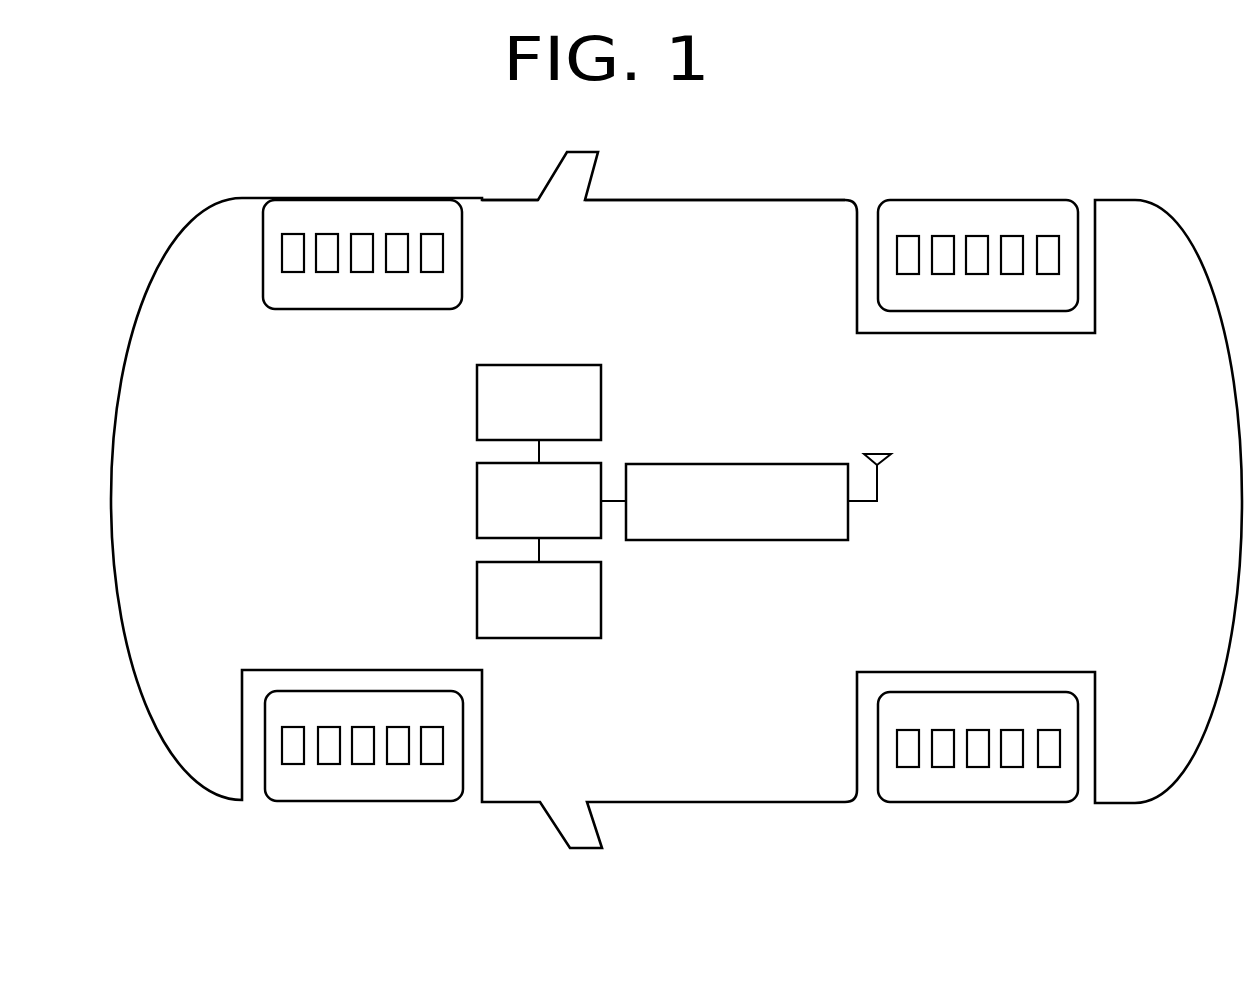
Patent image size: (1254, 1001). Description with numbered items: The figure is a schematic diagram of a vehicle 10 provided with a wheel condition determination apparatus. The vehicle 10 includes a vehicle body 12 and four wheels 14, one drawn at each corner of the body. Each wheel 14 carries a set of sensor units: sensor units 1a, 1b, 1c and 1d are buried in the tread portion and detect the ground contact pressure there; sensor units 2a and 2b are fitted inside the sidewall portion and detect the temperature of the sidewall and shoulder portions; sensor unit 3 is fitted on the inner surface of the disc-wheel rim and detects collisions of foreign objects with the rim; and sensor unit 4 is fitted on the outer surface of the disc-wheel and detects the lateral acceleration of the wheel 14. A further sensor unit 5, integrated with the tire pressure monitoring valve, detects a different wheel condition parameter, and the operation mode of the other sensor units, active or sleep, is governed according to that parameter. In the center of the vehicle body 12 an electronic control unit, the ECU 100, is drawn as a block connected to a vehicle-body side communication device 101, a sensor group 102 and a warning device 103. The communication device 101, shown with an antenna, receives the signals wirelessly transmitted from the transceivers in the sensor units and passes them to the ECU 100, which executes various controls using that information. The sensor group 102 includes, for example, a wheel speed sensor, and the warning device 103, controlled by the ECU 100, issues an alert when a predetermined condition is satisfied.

The sensor unit 1a is at (293, 263).
The sensor unit 1b is at (851, 305).
The sensor unit 1c is at (240, 694).
The sensor unit 1d is at (854, 695).
The sensor unit 2a is at (284, 207).
The sensor unit 2b is at (327, 240).
The sensor unit 3 is at (363, 263).
The sensor unit 4 is at (393, 263).
The sensor unit 5 is at (430, 240).
The vehicle 10 is at (693, 825).
The vehicle body 12 is at (717, 200).
The wheel 14 is at (357, 198).
The electronic control unit 100 is at (477, 498).
The vehicle-body side communication device 101 is at (753, 464).
The sensor group 102 is at (477, 595).
The warning device 103 is at (477, 397).